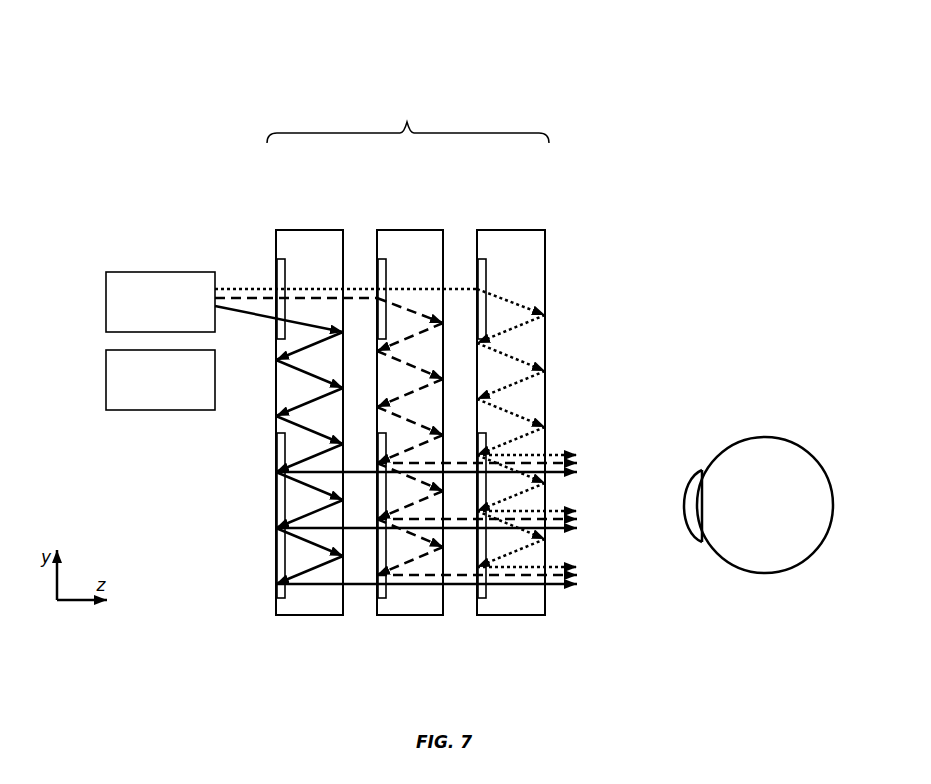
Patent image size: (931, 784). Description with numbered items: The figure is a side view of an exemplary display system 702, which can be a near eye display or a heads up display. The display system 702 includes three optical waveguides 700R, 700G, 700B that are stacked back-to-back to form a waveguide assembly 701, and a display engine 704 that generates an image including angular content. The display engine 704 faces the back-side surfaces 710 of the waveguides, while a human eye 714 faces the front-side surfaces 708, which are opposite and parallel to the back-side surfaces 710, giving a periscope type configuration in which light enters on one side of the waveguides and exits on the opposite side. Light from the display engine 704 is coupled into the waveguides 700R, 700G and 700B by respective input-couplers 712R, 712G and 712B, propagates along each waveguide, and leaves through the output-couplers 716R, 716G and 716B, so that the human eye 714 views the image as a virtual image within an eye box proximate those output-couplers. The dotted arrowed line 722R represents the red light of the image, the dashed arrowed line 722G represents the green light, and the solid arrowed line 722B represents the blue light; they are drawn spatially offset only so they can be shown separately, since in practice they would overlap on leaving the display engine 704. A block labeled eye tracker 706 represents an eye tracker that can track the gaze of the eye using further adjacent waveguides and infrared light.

The display system 702 is at (243, 60).
The waveguide assembly 701 is at (408, 120).
The optical waveguide 700B is at (298, 230).
The optical waveguide 700G is at (402, 230).
The optical waveguide 700R is at (502, 230).
The input-coupler 712B is at (277, 260).
The input-coupler 712G is at (378, 260).
The input-coupler 712R is at (478, 260).
The output-coupler 716B is at (277, 592).
The output-coupler 716G is at (378, 592).
The output-coupler 716R is at (478, 592).
The front-side surfaces 708 is at (344, 261).
The back-side surfaces 710 is at (276, 381).
The dotted arrowed line 722R is at (240, 289).
The dashed arrowed line 722G is at (220, 302).
The solid arrowed line 722B is at (239, 308).
The display engine 704 is at (170, 272).
The eye tracker 706 is at (132, 410).
The human eye 714 is at (755, 435).